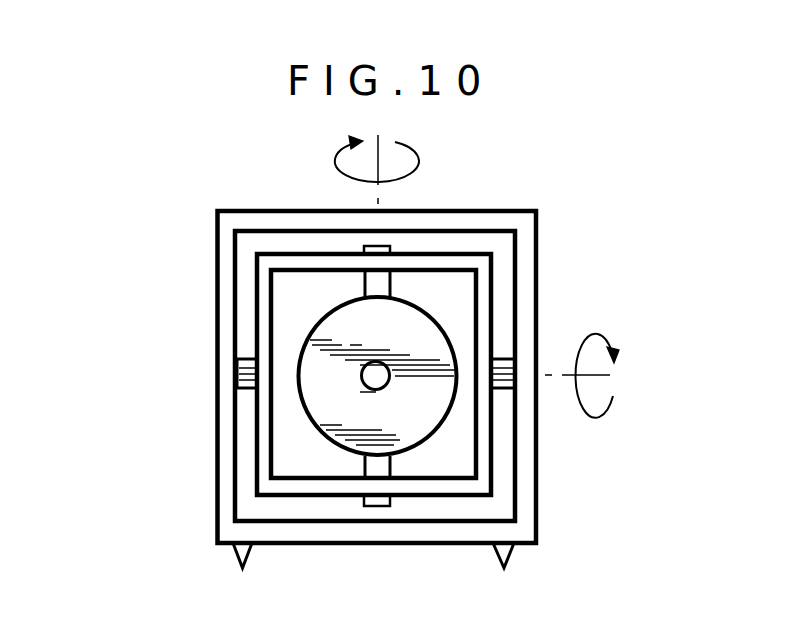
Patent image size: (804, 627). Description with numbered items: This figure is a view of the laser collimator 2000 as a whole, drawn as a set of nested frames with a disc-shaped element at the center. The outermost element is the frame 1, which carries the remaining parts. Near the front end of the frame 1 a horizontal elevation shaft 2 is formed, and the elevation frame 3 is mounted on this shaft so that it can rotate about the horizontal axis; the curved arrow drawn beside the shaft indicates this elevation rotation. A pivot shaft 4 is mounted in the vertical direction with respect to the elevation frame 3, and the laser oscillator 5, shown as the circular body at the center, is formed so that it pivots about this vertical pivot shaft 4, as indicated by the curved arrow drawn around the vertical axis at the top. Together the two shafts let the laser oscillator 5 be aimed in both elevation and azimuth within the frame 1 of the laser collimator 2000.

The frame 1 is at (526, 212).
The horizontal elevation shaft 2 is at (497, 362).
The elevation frame 3 is at (441, 255).
The pivot shaft 4 is at (370, 284).
The laser oscillator 5 is at (407, 427).
The laser collimator 2000 is at (202, 392).